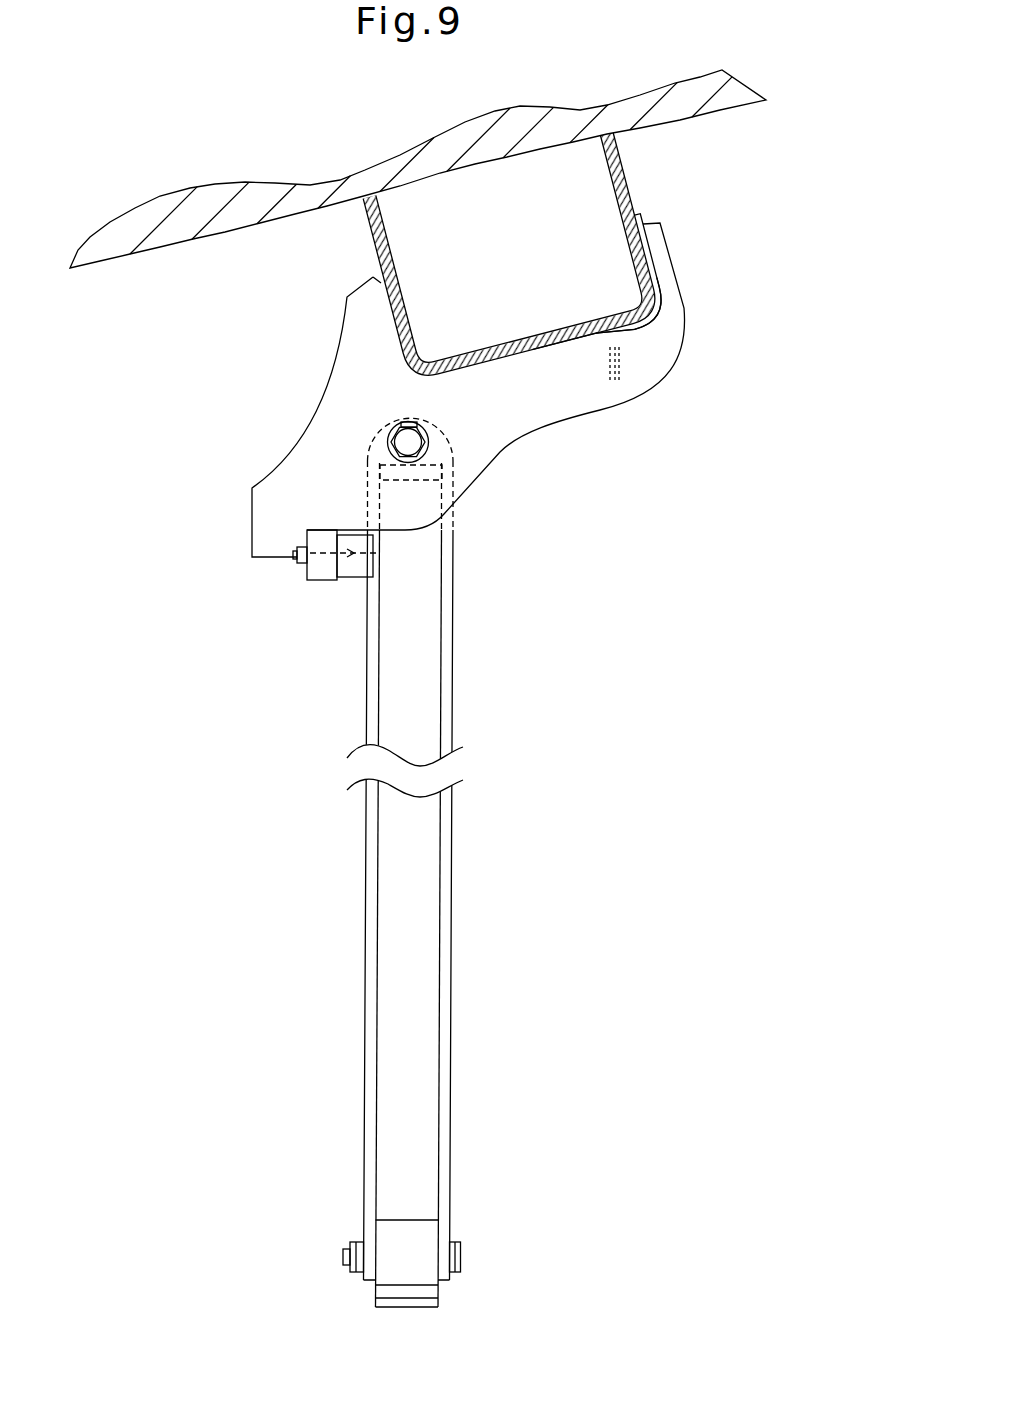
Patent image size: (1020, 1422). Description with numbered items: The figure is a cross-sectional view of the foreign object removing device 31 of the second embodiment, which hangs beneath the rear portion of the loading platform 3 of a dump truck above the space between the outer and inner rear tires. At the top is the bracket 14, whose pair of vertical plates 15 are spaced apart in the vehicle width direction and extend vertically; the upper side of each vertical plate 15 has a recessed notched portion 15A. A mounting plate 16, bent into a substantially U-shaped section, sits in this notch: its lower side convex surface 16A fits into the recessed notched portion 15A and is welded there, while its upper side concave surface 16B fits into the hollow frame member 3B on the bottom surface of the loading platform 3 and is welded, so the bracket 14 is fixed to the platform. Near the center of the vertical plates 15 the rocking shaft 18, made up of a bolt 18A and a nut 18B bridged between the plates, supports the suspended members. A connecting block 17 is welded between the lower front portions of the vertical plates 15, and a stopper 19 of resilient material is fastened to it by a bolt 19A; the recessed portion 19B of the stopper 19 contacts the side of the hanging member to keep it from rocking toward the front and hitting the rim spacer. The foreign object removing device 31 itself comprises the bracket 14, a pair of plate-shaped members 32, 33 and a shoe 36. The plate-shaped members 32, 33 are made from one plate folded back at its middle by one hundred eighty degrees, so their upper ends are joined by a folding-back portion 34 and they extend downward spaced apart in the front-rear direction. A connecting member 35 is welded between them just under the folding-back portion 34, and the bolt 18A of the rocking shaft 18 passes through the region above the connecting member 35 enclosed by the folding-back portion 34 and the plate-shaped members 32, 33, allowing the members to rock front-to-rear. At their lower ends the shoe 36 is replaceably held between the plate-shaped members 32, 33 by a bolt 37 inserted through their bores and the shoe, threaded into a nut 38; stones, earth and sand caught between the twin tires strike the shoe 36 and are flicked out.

The loading platform 3 is at (175, 228).
The hollow frame member 3B is at (620, 180).
The bracket 14 is at (608, 410).
The vertical plate 15 is at (307, 465).
The recessed notched portion 15A is at (513, 353).
The mounting plate 16 is at (650, 250).
The lower side convex surface 16A is at (610, 333).
The upper side concave surface 16B is at (642, 312).
The connecting block 17 is at (305, 577).
The rocking shaft 18 is at (400, 423).
The bolt 18A is at (400, 440).
The nut 18B is at (428, 447).
The stopper 19 is at (353, 573).
The bolt 19A is at (297, 560).
The recessed portion 19B is at (380, 553).
The foreign object removing device 31 is at (456, 635).
The plate-shaped member 32 is at (370, 862).
The plate-shaped member 33 is at (447, 870).
The folding-back portion 34 is at (383, 427).
The connecting member 35 is at (410, 470).
The shoe 36 is at (423, 1226).
The bolt 37 is at (460, 1257).
The nut 38 is at (350, 1243).